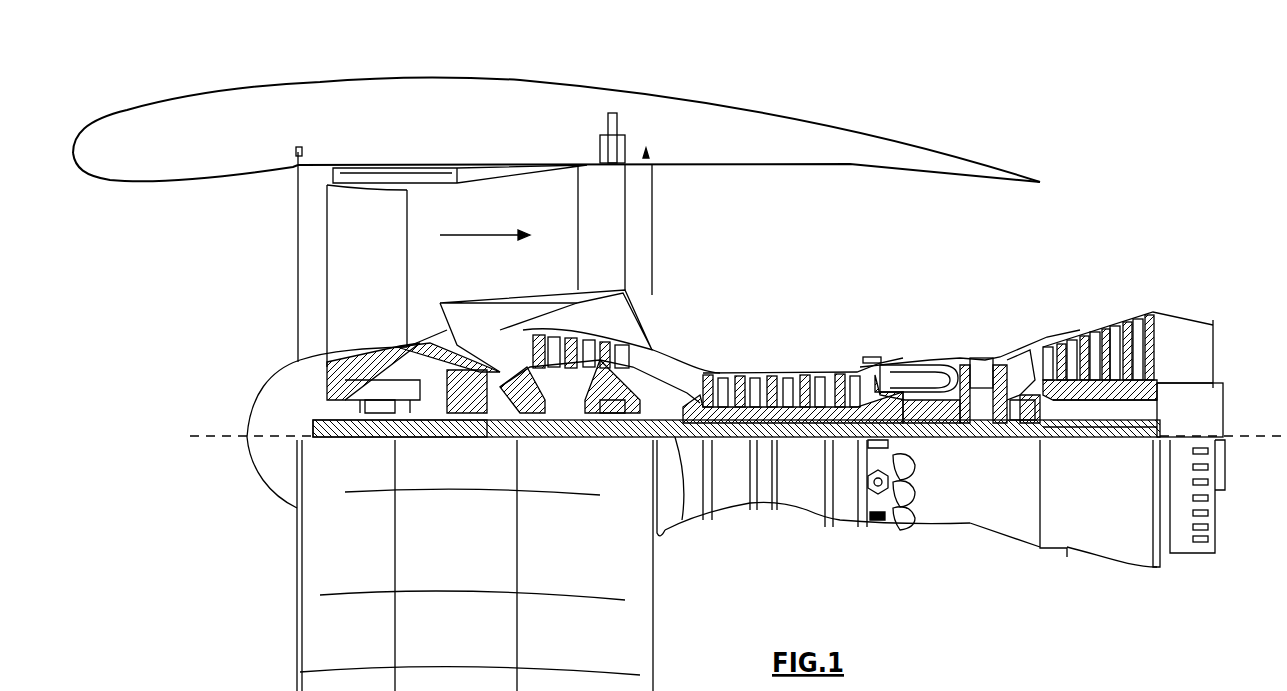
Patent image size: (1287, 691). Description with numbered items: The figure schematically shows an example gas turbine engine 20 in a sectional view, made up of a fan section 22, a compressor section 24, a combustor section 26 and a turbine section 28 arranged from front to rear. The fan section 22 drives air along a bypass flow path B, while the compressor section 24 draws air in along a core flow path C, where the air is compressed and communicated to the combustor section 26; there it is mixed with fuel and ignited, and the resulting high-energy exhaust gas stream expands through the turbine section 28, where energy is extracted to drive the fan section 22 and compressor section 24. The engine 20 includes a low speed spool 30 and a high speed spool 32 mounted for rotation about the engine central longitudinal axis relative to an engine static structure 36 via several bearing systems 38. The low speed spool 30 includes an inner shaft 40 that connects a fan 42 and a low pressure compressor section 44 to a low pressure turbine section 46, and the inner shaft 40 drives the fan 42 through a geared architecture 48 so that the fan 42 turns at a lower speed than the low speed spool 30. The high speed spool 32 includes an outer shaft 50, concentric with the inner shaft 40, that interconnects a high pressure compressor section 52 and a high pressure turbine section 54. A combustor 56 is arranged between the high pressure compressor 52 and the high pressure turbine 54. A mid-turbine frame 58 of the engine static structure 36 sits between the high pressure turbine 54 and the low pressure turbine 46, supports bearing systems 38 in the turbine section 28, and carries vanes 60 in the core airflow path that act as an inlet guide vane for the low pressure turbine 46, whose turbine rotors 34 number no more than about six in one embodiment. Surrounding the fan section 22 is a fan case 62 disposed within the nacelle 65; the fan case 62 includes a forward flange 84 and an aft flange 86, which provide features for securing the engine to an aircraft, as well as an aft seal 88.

The gas turbine engine 20 is at (1107, 160).
The fan section 22 is at (228, 70).
The compressor section 24 is at (545, 278).
The combustor section 26 is at (880, 278).
The turbine section 28 is at (1170, 278).
The low speed spool 30 is at (803, 440).
The high speed spool 32 is at (845, 390).
The turbine rotors 34 is at (1115, 440).
The engine static structure 36 is at (843, 520).
The bearing systems 38 is at (372, 445).
The inner shaft 40 is at (678, 525).
The fan 42 is at (352, 259).
The low pressure compressor section 44 is at (590, 340).
The low pressure turbine section 46 is at (1097, 328).
The geared architecture 48 is at (480, 445).
The outer shaft 50 is at (920, 440).
The high pressure compressor section 52 is at (773, 380).
The high pressure turbine section 54 is at (980, 358).
The combustor 56 is at (920, 372).
The mid-turbine frame 58 is at (1018, 350).
The vanes 60 is at (1065, 445).
The fan case 62 is at (487, 162).
The nacelle 65 is at (720, 128).
The forward flange 84 is at (303, 152).
The aft flange 86 is at (628, 143).
The aft seal 88 is at (655, 152).
The bypass flow path B is at (470, 235).
The core flow path C is at (478, 340).